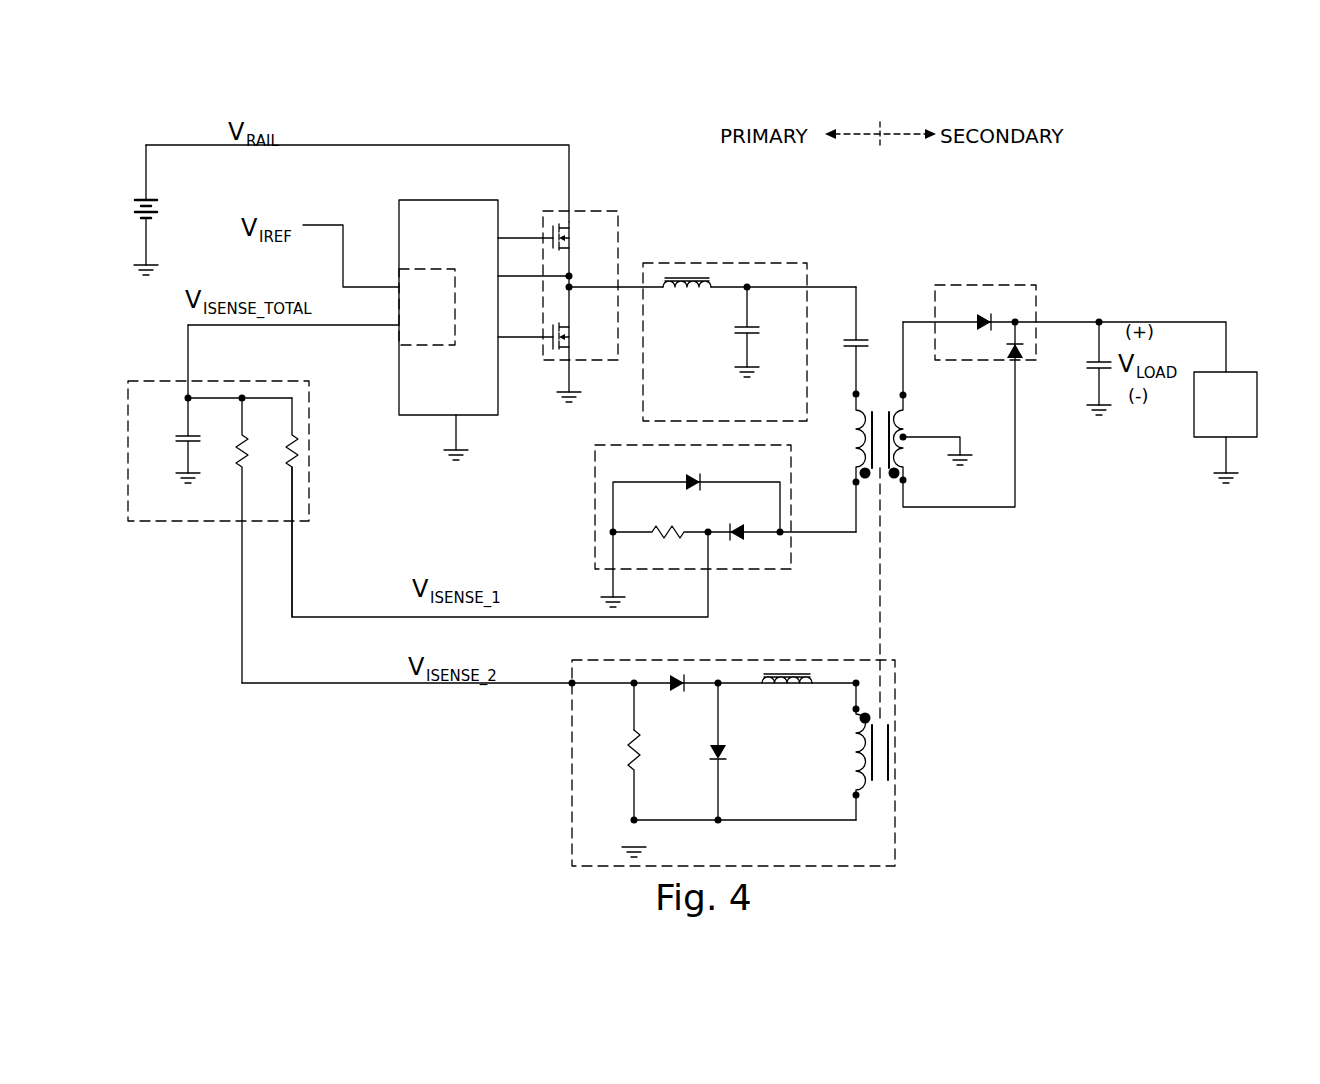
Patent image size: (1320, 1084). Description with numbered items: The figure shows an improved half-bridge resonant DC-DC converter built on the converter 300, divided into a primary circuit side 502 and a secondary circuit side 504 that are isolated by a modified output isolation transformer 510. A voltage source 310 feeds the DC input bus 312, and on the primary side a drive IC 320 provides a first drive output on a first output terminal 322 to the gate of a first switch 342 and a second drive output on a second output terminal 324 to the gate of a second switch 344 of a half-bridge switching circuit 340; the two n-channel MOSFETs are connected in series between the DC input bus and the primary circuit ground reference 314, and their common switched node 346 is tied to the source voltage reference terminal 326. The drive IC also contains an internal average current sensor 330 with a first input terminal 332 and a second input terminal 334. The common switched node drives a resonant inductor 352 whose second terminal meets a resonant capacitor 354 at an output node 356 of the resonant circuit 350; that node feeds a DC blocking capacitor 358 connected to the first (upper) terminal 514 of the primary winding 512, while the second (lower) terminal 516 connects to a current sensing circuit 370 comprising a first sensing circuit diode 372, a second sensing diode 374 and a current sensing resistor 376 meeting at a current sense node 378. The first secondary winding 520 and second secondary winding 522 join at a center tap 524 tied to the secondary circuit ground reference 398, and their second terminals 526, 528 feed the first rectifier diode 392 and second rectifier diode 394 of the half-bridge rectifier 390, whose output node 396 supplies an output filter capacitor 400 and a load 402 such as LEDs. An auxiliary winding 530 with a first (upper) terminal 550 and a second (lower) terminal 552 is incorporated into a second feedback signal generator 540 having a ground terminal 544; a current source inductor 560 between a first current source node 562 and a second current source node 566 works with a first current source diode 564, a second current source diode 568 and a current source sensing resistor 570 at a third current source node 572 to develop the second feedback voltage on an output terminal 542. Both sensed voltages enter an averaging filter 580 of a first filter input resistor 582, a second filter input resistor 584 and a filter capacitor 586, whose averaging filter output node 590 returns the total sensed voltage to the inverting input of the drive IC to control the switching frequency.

The converter 300 is at (1143, 248).
The voltage source 310 is at (146, 200).
The DC input bus 312 is at (350, 145).
The primary circuit ground reference 314 is at (146, 264).
The drive IC 320 is at (428, 200).
The first output terminal 322 is at (500, 238).
The second output terminal 324 is at (500, 338).
The source voltage reference terminal 326 is at (500, 278).
The internal average current sensor 330 is at (410, 272).
The first input terminal 332 is at (398, 288).
The second input terminal 334 is at (398, 325).
The half-bridge switching circuit 340 is at (575, 211).
The first switch 342 is at (562, 248).
The second switch 344 is at (562, 347).
The common switched node 346 is at (572, 287).
The resonant circuit 350 is at (685, 263).
The resonant inductor 352 is at (683, 294).
The resonant capacitor 354 is at (750, 334).
The output node 356 is at (750, 290).
The DC blocking capacitor 358 is at (862, 338).
The current sensing circuit 370 is at (594, 508).
The first sensing circuit diode 372 is at (692, 480).
The second sensing diode 374 is at (733, 532).
The current sensing resistor 376 is at (675, 538).
The current sense node 378 is at (710, 535).
The half-bridge rectifier 390 is at (985, 285).
The first rectifier diode 392 is at (980, 318).
The second rectifier diode 394 is at (1011, 358).
The output node 396 is at (1018, 320).
The secondary circuit ground reference 398 is at (962, 456).
The output filter capacitor 400 is at (1096, 363).
The load 402 is at (1233, 372).
The primary circuit side 502 is at (808, 222).
The secondary circuit side 504 is at (950, 222).
The modified output isolation transformer 510 is at (884, 490).
The primary winding 512 is at (852, 442).
The first (upper) terminal 514 is at (852, 395).
The second (lower) terminal 516 is at (852, 483).
The first secondary winding 520 is at (905, 425).
The second secondary winding 522 is at (906, 455).
The center tap 524 is at (906, 437).
The second terminal 526 is at (905, 393).
The second terminal 528 is at (906, 481).
The auxiliary winding 530 is at (856, 770).
The second feedback signal generator 540 is at (570, 808).
The output terminal 542 is at (572, 685).
The ground terminal 544 is at (636, 820).
The first (upper) terminal 550 is at (852, 710).
The second (lower) terminal 552 is at (856, 796).
The current source inductor 560 is at (797, 688).
The first current source node 562 is at (856, 683).
The first current source diode 564 is at (722, 758).
The second current source node 566 is at (718, 683).
The second current source diode 568 is at (672, 690).
The current source sensing resistor 570 is at (630, 768).
The third current source node 572 is at (634, 683).
The averaging filter 580 is at (262, 381).
The first filter input resistor 582 is at (288, 450).
The second filter input resistor 584 is at (238, 450).
The filter capacitor 586 is at (184, 436).
The averaging filter output node 590 is at (186, 396).